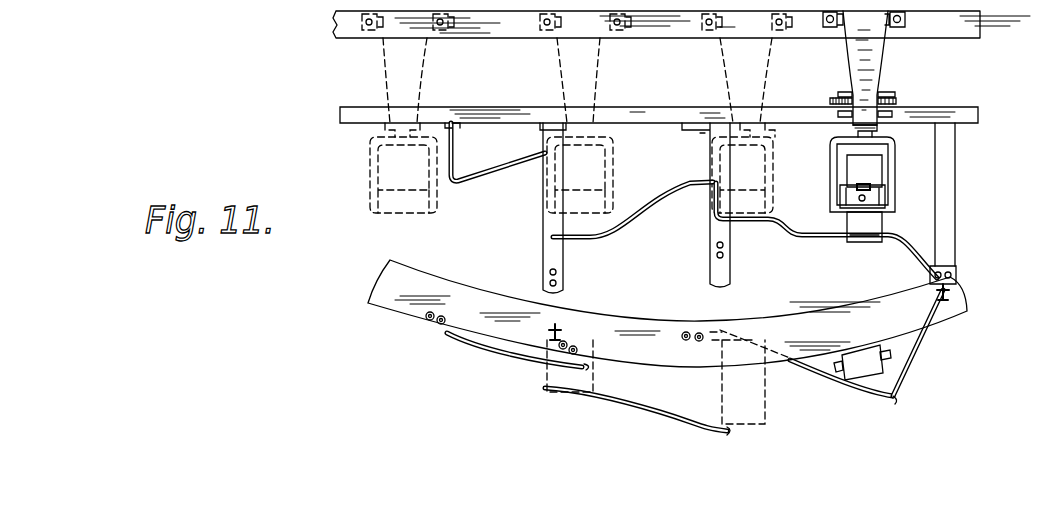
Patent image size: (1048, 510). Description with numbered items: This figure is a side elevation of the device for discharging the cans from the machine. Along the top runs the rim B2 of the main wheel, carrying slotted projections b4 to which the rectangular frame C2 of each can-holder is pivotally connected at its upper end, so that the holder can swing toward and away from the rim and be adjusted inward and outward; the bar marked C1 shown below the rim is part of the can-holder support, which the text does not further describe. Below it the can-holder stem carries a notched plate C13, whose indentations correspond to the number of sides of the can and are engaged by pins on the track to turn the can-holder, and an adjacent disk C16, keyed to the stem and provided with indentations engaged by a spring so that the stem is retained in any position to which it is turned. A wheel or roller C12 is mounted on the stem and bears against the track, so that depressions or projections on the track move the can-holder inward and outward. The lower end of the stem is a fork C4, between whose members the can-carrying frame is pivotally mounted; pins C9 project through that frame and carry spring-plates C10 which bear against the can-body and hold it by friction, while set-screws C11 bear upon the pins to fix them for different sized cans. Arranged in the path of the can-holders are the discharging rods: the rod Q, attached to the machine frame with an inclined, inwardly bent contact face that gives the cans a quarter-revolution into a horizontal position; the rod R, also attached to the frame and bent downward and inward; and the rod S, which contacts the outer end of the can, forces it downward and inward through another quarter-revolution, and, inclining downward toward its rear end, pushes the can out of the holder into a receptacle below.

The rim B2 is at (960, 31).
The projection b4 is at (822, 27).
The lower cross bar C1 is at (878, 86).
The rectangular frame C2 is at (852, 72).
The plate C13 is at (830, 100).
The disk C16 is at (838, 95).
The wheel or roller C12 is at (893, 113).
The fork C4 is at (895, 155).
The set-screws C11 is at (863, 187).
The spring-plates C10 is at (856, 186).
The pins C9 is at (865, 200).
The rod S is at (500, 172).
The rod R is at (673, 196).
The rod Q is at (816, 240).